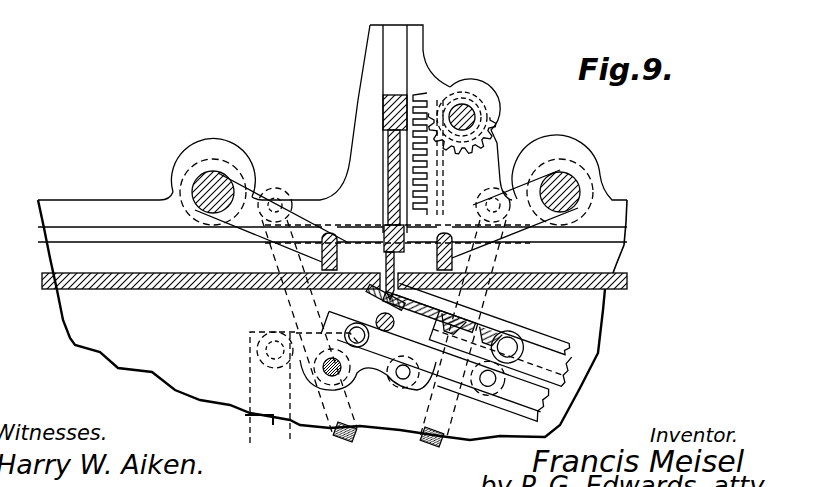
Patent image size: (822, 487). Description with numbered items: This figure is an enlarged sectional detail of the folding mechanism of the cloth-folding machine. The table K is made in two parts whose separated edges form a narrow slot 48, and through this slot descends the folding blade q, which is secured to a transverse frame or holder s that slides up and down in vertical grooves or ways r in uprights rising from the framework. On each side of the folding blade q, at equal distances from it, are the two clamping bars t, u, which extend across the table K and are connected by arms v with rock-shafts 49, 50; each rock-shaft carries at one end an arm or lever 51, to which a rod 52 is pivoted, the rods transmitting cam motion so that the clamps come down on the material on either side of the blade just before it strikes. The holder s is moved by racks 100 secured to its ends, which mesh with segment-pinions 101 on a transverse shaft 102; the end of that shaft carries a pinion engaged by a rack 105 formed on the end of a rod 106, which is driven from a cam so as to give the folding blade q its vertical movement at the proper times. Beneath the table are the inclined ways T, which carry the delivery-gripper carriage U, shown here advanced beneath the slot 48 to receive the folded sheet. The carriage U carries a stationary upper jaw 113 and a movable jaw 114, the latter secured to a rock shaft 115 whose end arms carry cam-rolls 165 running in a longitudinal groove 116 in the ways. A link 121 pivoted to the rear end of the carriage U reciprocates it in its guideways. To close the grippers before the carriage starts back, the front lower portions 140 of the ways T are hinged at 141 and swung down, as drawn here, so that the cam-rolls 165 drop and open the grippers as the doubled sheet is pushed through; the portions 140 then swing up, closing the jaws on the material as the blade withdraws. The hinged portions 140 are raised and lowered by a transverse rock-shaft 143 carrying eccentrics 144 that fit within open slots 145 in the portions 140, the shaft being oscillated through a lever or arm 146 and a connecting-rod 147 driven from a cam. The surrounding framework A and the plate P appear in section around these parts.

The slot 48 is at (384, 255).
The rock-shaft 49 is at (206, 190).
The rock-shaft 50 is at (568, 186).
The arm or lever 51 is at (268, 185).
The rod 52 is at (420, 444).
The rack 100 is at (428, 190).
The segment-pinion 101 is at (488, 137).
The transverse shaft 102 is at (480, 104).
The rack 105 is at (442, 206).
The rod 106 is at (458, 450).
The stationary upper jaw 113 is at (410, 303).
The movable jaw 114 is at (372, 312).
The rock shaft 115 is at (377, 320).
The longitudinal groove 116 is at (510, 380).
The link 121 is at (570, 368).
The hinged front lower portion of the ways 140 is at (366, 364).
The hinge 141 is at (403, 380).
The transverse rock-shaft 143 is at (322, 378).
The eccentric 144 is at (333, 378).
The open slot 145 is at (315, 365).
The lever or arm 146 is at (290, 332).
The connecting-rod 147 is at (252, 432).
The cam-roll 165 is at (358, 340).
The frame A is at (332, 320).
The table K is at (168, 285).
The plate P is at (100, 237).
The inclined ways or guide-bars T is at (540, 338).
The delivery-gripper-carriage U is at (478, 314).
The folding blade q is at (387, 262).
The vertical grooves or ways r is at (385, 67).
The transverse frame or holder s is at (392, 186).
The clamping bar t is at (334, 251).
The clamping bar u is at (438, 256).
The arm v is at (245, 222).